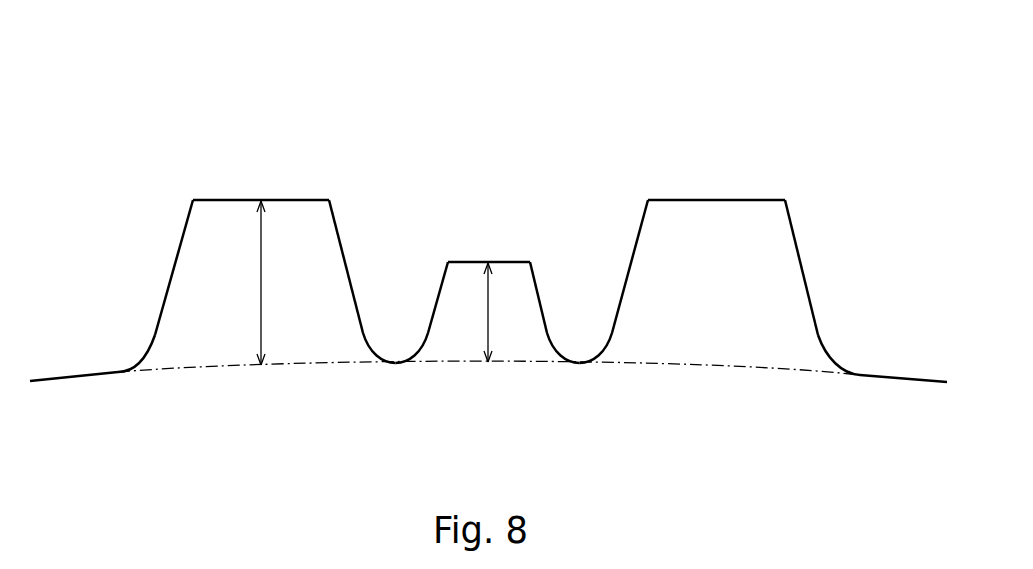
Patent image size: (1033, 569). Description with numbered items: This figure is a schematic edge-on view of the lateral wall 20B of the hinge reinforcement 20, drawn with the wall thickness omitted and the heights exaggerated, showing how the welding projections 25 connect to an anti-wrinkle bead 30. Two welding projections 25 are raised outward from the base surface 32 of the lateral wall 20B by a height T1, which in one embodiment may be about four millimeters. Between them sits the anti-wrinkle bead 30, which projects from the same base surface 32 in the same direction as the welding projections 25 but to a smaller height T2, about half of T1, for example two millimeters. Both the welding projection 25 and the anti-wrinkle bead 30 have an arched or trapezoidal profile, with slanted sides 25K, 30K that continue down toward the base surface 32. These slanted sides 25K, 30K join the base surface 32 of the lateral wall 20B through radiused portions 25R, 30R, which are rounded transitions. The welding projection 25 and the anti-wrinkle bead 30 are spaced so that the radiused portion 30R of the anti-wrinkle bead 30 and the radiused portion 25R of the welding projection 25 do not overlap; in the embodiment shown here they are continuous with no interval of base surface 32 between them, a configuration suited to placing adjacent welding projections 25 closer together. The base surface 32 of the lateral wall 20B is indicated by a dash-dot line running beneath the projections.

The lateral wall 20B is at (619, 127).
The hinge reinforcement 20 is at (488, 258).
The welding projection 25 is at (300, 199).
The slanted side 25K is at (173, 262).
The radiused portion 25R is at (138, 360).
The anti-wrinkle bead 30 is at (463, 260).
The slanted side 30K is at (437, 312).
The radiused portion 30R is at (426, 351).
The base surface 32 is at (200, 371).
The height of welding projection T1 is at (280, 283).
The height of anti-wrinkle bead T2 is at (506, 312).